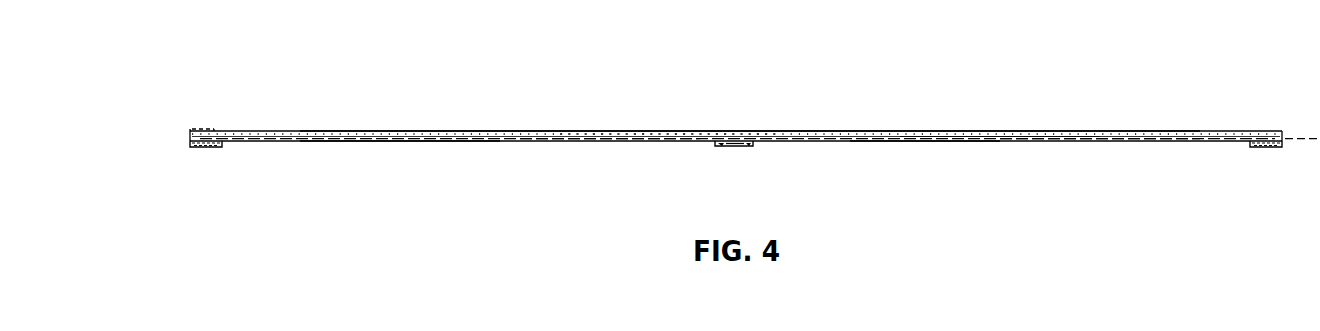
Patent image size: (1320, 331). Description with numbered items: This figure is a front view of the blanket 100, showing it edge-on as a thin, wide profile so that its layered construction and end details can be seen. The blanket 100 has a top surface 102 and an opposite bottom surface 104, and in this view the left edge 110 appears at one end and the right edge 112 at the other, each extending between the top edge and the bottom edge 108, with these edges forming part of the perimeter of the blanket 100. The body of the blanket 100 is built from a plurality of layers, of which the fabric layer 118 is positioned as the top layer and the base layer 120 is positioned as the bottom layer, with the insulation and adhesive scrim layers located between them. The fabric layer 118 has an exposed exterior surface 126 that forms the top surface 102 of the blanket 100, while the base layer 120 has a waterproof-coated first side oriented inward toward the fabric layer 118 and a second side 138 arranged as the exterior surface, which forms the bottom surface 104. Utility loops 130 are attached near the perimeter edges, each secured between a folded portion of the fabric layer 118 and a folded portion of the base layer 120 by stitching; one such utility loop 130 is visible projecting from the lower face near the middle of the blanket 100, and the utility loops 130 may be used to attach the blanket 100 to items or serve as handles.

The blanket 100 is at (201, 66).
The top surface 102 is at (828, 132).
The bottom surface 104 is at (916, 143).
The bottom edge 108 is at (1080, 143).
The left edge 110 is at (190, 142).
The right edge 112 is at (1283, 135).
The fabric layer 118 is at (675, 134).
The base layer 120 is at (400, 143).
The exterior surface 126 is at (980, 132).
The utility loops 130 is at (735, 146).
The second side 138 is at (603, 143).